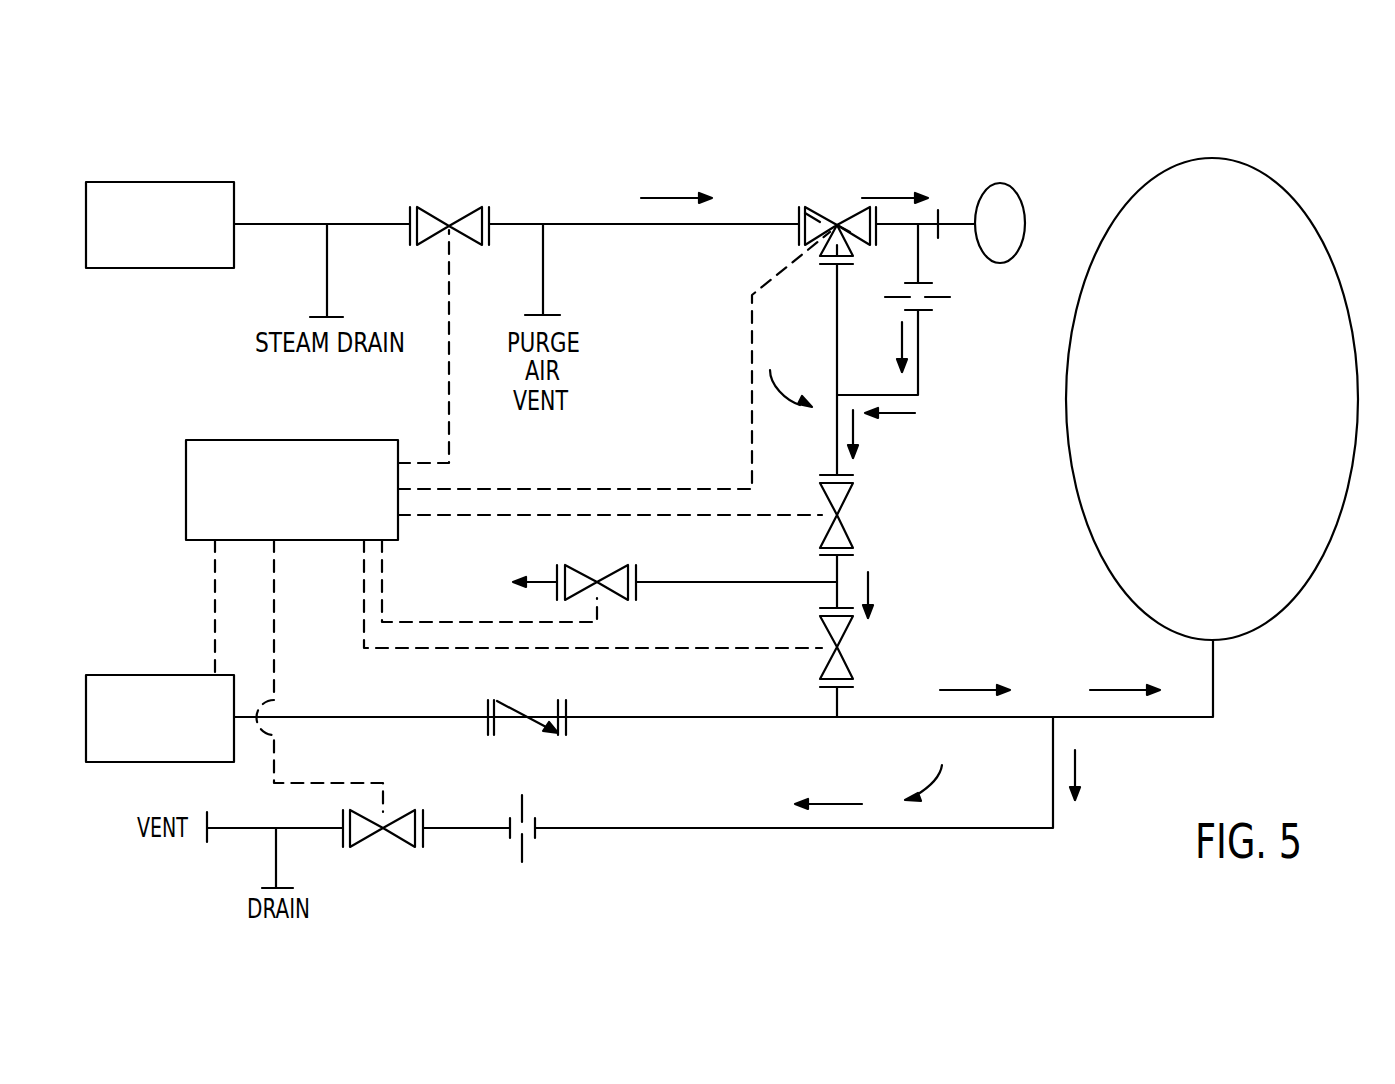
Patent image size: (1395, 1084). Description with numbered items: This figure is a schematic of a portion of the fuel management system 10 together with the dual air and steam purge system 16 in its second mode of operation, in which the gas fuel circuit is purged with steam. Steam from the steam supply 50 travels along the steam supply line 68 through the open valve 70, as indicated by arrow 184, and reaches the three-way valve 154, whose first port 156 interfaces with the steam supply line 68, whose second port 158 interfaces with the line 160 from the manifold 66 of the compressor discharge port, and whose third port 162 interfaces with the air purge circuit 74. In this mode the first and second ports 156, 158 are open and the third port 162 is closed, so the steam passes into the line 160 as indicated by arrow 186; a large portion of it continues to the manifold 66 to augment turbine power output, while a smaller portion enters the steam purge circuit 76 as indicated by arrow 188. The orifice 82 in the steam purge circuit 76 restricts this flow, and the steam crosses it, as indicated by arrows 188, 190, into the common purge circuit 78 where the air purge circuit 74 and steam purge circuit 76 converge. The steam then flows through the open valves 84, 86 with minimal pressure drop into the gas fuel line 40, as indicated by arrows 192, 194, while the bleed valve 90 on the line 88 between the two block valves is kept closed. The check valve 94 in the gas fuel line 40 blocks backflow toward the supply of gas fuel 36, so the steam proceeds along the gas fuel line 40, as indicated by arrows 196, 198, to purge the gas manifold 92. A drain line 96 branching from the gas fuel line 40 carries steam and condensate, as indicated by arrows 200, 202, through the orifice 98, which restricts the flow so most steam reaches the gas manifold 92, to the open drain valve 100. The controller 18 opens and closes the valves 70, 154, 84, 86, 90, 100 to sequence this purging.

The fuel management system 10 is at (118, 648).
The purge system 16 is at (856, 572).
The controller 18 is at (294, 440).
The gas fuel 36 is at (160, 675).
The gas fuel line 40 is at (700, 719).
The steam supply 50 is at (162, 182).
The manifold of the compressor discharge port 66 is at (1010, 258).
The steam supply line 68 is at (563, 224).
The valve 70 is at (449, 210).
The air purge circuit 74 is at (835, 380).
The steam purge circuit 76 is at (920, 342).
The common purge circuit 78 is at (840, 574).
The orifice 82 is at (940, 298).
The valve 84 is at (840, 513).
The valve 86 is at (840, 646).
The line 88 is at (660, 583).
The valve 90 is at (605, 574).
The gas manifold 92 is at (1114, 223).
The valve 94 is at (522, 720).
The drain line 96 is at (736, 829).
The orifice 98 is at (526, 842).
The valve 100 is at (383, 836).
The three-way valve 154 is at (837, 222).
The first port 156 is at (812, 212).
The second port 158 is at (838, 222).
The line 160 is at (908, 223).
The third port 162 is at (852, 258).
The arrow 184 is at (672, 198).
The arrow 186 is at (888, 198).
The arrow 188 is at (898, 340).
The arrow 190 is at (897, 414).
The arrow 192 is at (858, 428).
The arrow 194 is at (872, 590).
The arrow 196 is at (975, 690).
The arrow 198 is at (1122, 690).
The arrow 200 is at (1078, 770).
The arrow 202 is at (838, 804).